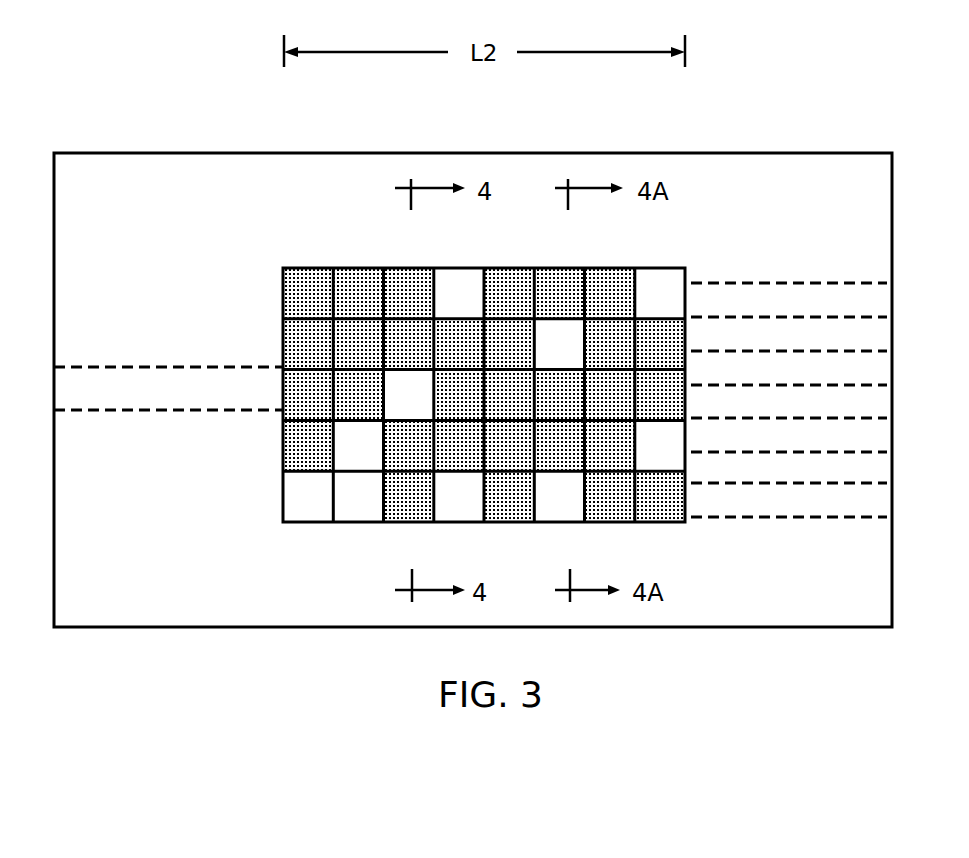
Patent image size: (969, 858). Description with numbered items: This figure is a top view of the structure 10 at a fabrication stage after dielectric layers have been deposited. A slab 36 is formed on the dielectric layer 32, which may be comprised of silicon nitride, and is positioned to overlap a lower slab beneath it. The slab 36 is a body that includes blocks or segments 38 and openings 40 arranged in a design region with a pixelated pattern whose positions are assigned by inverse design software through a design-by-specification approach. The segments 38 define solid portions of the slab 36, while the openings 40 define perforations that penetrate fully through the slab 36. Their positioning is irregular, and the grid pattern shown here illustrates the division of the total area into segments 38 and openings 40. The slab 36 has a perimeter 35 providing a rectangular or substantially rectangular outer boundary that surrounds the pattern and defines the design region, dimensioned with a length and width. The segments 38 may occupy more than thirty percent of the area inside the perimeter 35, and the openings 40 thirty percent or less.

The structure 10 is at (473, 390).
The dielectric layer 32 is at (140, 596).
The perimeter 35 is at (283, 455).
The slab 36 is at (313, 245).
The segments 38 is at (358, 307).
The openings 40 is at (571, 356).